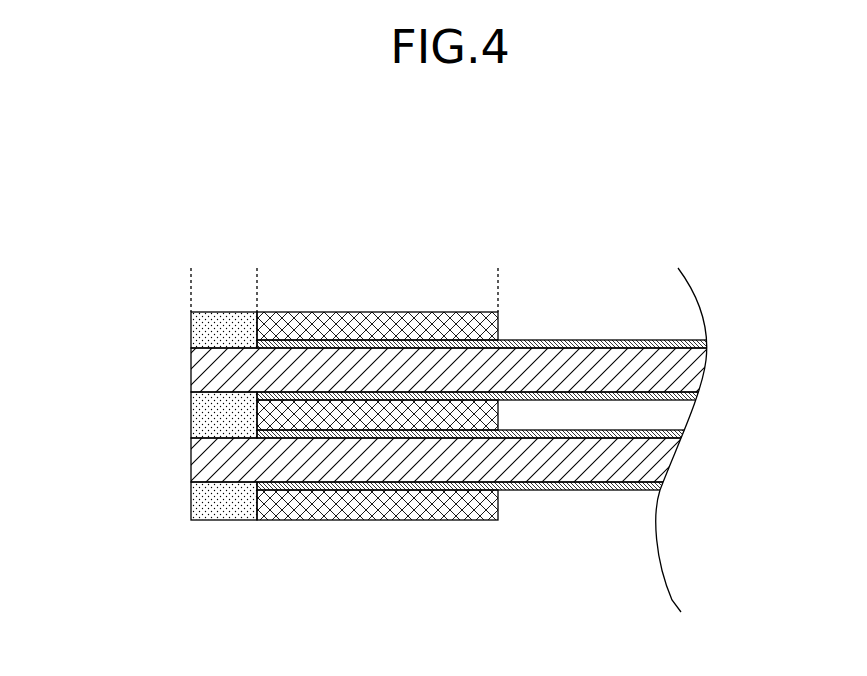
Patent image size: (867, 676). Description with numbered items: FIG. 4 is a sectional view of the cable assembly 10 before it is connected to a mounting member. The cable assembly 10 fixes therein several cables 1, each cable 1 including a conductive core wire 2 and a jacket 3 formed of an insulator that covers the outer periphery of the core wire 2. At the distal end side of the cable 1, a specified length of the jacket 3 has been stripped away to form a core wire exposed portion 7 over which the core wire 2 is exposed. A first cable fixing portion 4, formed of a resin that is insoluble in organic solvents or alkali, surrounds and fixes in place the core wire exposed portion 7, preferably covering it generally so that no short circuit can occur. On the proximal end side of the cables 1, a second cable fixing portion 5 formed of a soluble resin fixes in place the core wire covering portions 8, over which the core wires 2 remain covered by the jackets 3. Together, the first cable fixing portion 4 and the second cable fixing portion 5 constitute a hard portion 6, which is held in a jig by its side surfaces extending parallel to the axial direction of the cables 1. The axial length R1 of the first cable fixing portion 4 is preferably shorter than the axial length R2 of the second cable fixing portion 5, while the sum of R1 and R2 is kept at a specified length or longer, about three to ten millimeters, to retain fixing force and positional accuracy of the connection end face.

The cable 1 is at (435, 402).
The core wire 2 is at (191, 372).
The jacket 3 is at (550, 340).
The first cable fixing portion 4 is at (221, 520).
The second cable fixing portion 5 is at (498, 555).
The hard portion 6 is at (433, 558).
The core wire exposed portion 7 is at (228, 487).
The core wire covering portion 8 is at (257, 493).
The cable assembly 10 is at (344, 258).
The axial length of first cable fixing portion R1 is at (257, 297).
The axial length of second cable fixing portion R2 is at (377, 305).